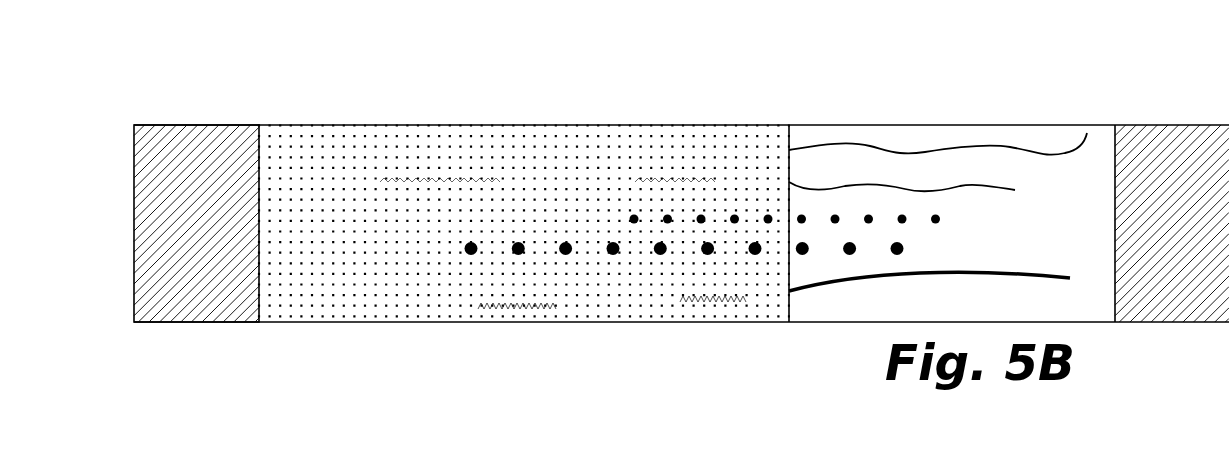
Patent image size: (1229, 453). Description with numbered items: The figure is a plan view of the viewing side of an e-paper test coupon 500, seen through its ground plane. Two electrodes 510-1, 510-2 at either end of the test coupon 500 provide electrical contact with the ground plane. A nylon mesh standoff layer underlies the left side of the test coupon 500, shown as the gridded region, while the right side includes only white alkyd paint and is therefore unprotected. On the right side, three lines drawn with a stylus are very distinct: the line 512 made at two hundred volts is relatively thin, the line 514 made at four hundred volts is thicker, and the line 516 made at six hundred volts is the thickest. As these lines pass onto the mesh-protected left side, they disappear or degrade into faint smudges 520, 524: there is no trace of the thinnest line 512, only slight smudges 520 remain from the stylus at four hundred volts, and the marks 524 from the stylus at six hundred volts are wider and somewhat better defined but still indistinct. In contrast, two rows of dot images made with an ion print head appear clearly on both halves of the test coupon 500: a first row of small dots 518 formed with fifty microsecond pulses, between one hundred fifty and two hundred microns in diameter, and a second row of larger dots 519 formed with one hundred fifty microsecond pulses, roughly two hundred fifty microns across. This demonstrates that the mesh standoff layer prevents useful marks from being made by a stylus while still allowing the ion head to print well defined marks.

The test coupon 500 is at (199, 78).
The electrode 510-1 is at (223, 224).
The electrode 510-2 is at (1209, 224).
The line 512 is at (853, 148).
The line 514 is at (968, 188).
The line 516 is at (975, 278).
The small dots 518 is at (944, 219).
The larger dots 519 is at (905, 248).
The smudges 520 is at (648, 170).
The smudges 524 is at (718, 298).